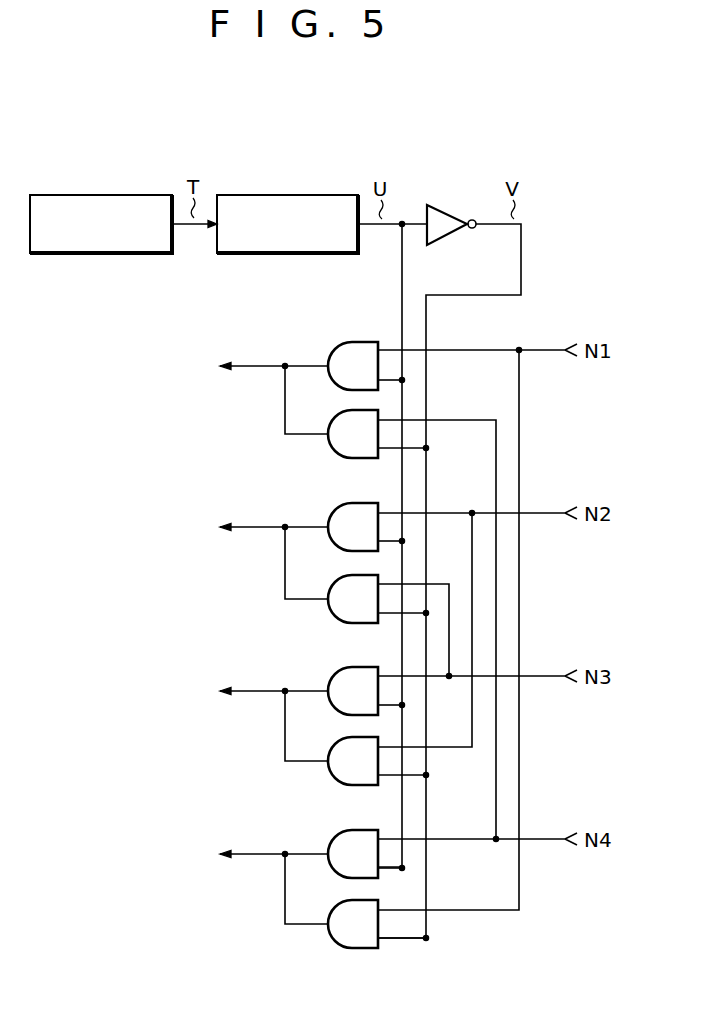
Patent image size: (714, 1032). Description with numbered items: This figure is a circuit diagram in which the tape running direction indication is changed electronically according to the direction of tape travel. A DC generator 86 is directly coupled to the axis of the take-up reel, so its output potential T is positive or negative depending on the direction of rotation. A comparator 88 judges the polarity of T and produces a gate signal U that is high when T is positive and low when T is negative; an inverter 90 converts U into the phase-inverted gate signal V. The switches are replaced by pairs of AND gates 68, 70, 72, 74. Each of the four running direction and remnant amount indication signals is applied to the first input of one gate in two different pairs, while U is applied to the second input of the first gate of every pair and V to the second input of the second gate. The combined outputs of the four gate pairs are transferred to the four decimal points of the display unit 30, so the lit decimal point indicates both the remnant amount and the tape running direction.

The DC generator 86 is at (155, 201).
The comparator 88 is at (334, 201).
The inverter 90 is at (459, 219).
The AND gates 68 is at (344, 424).
The AND gates 70 is at (344, 589).
The AND gates 72 is at (344, 751).
The AND gates 74 is at (344, 914).
The display unit 30 is at (250, 638).